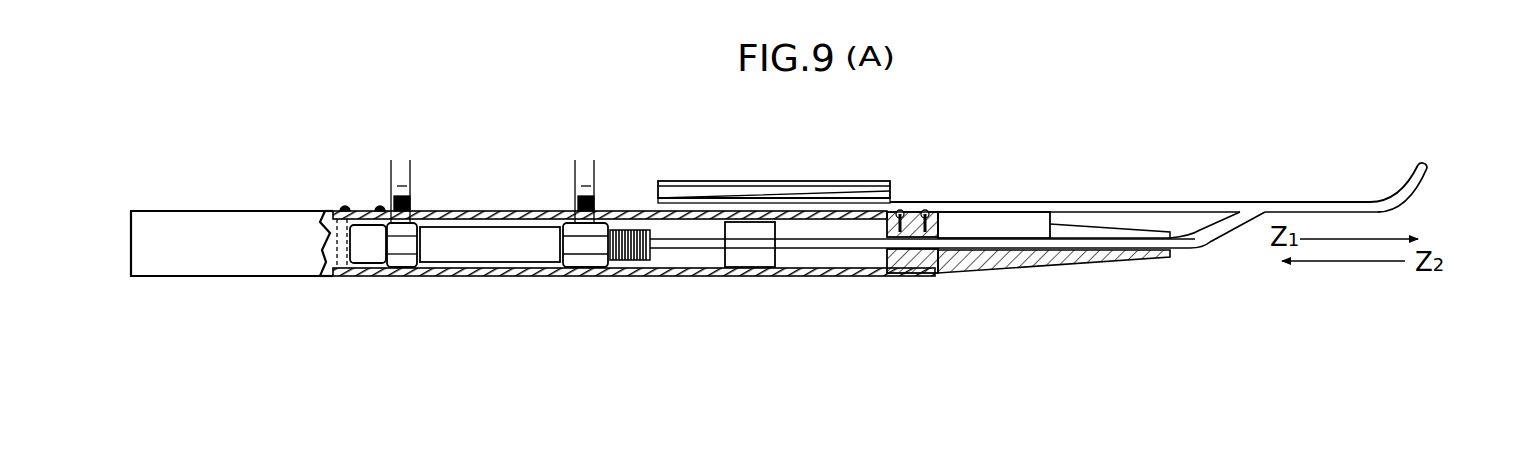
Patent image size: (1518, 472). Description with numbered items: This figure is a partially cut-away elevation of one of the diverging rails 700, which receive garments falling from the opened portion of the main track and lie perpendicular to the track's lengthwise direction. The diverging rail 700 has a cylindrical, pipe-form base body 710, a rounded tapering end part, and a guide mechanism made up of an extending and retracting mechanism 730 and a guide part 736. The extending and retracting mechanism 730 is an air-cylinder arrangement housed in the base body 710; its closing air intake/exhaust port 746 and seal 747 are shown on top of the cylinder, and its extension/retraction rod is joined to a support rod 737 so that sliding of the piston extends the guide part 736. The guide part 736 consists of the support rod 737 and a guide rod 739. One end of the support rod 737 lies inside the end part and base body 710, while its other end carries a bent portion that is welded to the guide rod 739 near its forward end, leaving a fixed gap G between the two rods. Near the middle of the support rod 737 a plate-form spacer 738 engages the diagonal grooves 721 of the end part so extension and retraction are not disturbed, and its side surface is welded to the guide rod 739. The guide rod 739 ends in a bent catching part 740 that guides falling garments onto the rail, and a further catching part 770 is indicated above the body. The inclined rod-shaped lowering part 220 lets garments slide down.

The diverging rail 700 is at (552, 318).
The cylindrical base body 710 is at (423, 277).
The extending and retracting mechanism 730 is at (500, 211).
The closing air intake/exhaust port 746 is at (590, 196).
The seal 747 is at (401, 196).
The catching part 770 is at (783, 182).
The spacer 738 is at (968, 230).
The grooves 721 is at (1064, 228).
The lowering part 220 is at (1030, 262).
The support rod 737 is at (1204, 255).
The guide part 736 is at (1212, 196).
The guide rod 739 is at (1320, 201).
The catching part 740 is at (1431, 170).
The gap G is at (810, 286).